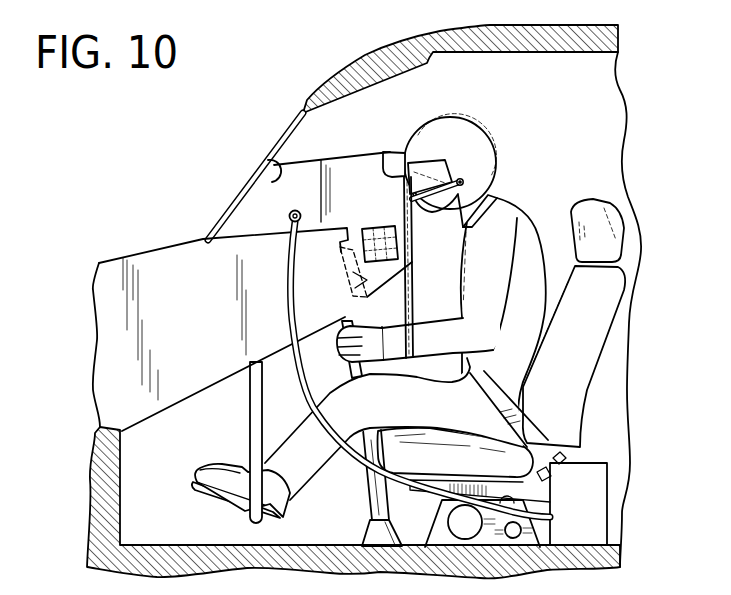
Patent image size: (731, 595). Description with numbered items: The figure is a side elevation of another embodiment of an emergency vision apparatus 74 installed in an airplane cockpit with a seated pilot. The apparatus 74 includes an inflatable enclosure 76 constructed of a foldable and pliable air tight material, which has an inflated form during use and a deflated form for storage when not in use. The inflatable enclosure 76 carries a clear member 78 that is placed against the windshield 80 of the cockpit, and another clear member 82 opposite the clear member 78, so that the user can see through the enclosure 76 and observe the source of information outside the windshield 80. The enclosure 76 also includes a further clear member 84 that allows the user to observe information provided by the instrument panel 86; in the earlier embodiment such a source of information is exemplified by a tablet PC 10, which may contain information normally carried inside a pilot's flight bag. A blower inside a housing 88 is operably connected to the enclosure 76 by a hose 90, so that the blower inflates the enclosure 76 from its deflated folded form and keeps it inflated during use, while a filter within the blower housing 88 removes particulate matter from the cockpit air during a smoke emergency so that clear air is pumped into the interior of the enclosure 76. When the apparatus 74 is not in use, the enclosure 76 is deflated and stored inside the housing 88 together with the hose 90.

The tablet PC 10 is at (300, 382).
The emergency vision apparatus 74 is at (222, 190).
The inflatable enclosure 76 is at (336, 145).
The clear member 78 is at (271, 158).
The windshield 80 is at (282, 131).
The clear member 82 is at (380, 147).
The clear member 84 is at (350, 300).
The instrument panel 86 is at (340, 254).
The housing 88 is at (583, 498).
The hose 90 is at (355, 455).